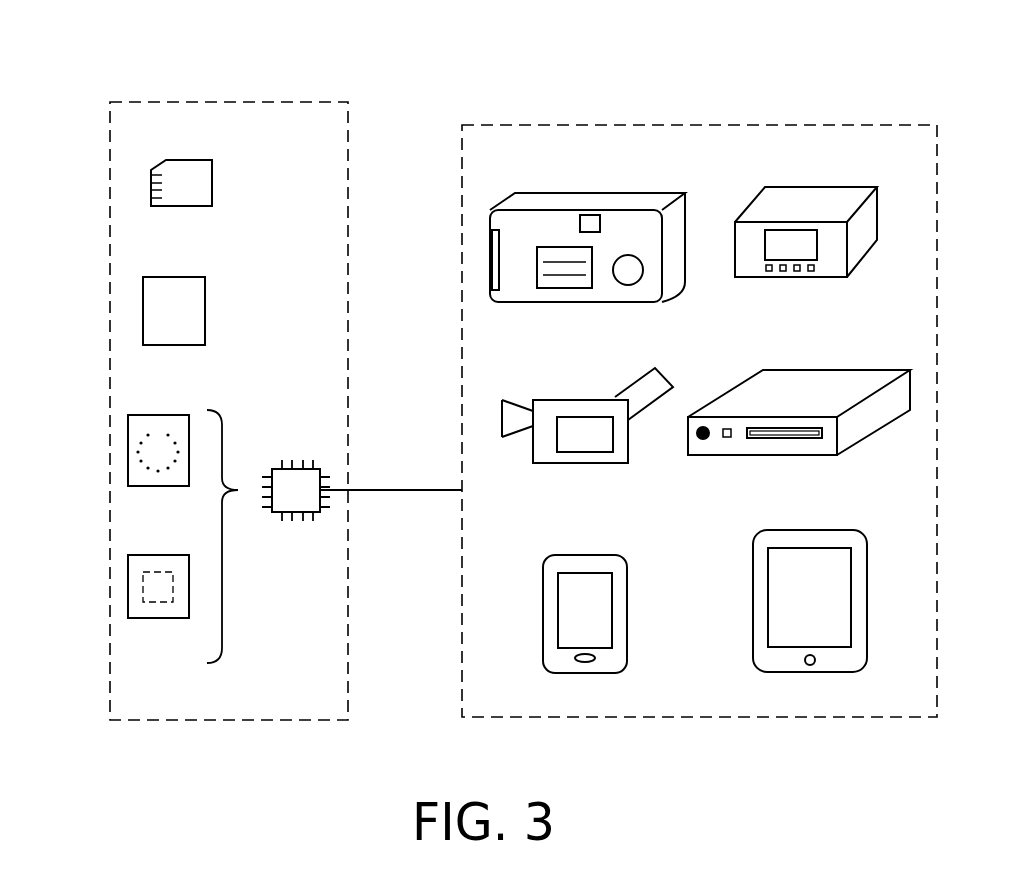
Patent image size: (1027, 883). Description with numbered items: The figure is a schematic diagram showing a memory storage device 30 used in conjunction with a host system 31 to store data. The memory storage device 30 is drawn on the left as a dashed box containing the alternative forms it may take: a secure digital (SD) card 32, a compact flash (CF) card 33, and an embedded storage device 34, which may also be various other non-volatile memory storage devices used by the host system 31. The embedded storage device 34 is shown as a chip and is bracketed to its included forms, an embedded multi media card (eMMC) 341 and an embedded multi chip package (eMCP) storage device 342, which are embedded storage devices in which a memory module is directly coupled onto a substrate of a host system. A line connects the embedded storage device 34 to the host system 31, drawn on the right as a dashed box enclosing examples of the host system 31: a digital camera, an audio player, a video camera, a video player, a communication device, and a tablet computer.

The memory storage device 30 is at (218, 100).
The host system 31 is at (622, 124).
The secure digital (SD) card 32 is at (150, 189).
The compact flash (CF) card 33 is at (143, 313).
The embedded storage device 34 is at (294, 468).
The embedded multi media card (eMMC) 341 is at (128, 450).
The embedded multi chip package (eMCP) storage device 342 is at (128, 585).